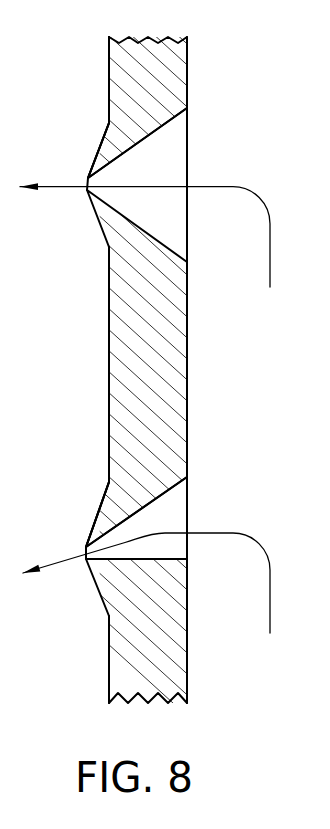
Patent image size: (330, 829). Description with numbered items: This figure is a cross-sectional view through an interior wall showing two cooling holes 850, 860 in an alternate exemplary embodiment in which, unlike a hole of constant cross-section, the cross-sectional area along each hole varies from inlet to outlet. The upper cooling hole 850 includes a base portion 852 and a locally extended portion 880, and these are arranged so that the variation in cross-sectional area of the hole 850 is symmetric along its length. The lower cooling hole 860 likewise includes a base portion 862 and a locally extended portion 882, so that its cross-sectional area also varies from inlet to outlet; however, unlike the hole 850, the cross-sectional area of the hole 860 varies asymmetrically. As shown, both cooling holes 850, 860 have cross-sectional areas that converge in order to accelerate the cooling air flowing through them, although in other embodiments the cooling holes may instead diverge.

The cooling hole 850 is at (88, 184).
The base portion 852 is at (138, 138).
The locally extended portion 880 is at (98, 148).
The cooling hole 860 is at (86, 548).
The base portion 862 is at (138, 508).
The locally extended portion 882 is at (98, 517).